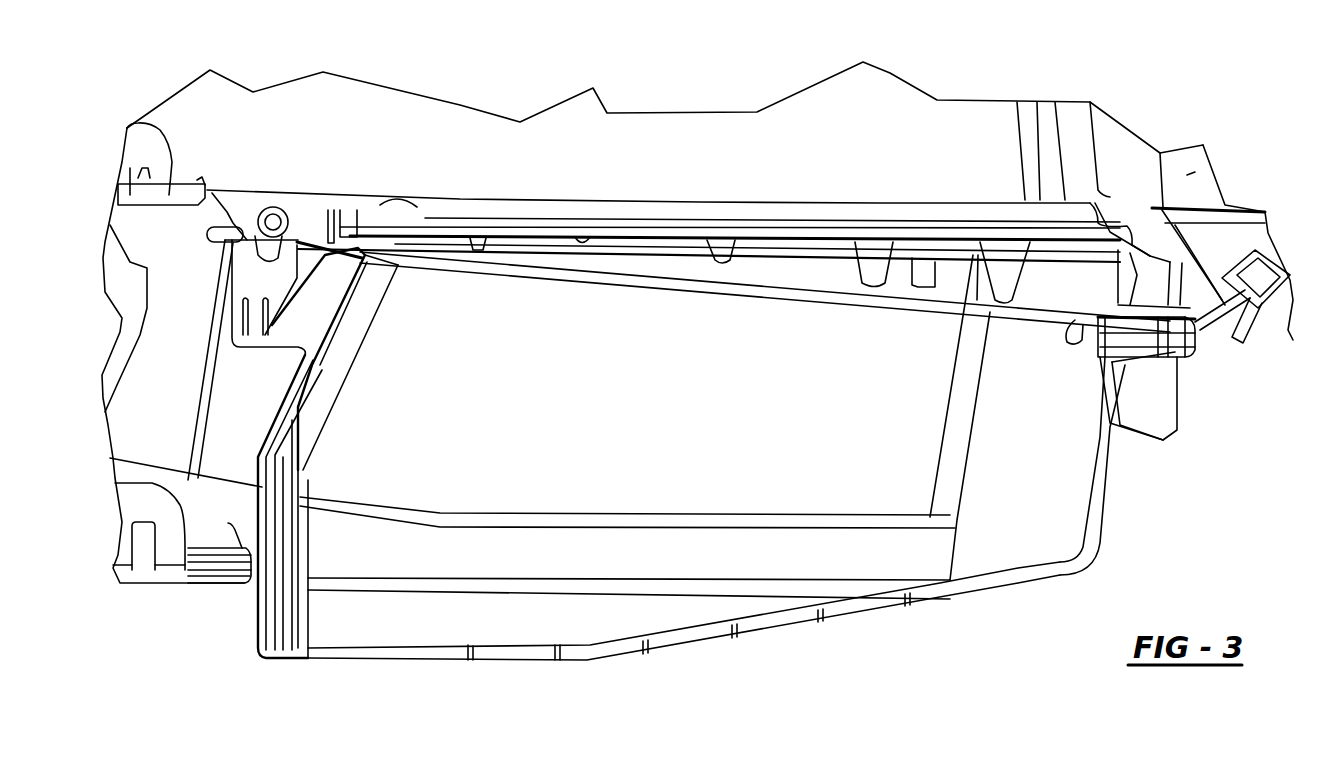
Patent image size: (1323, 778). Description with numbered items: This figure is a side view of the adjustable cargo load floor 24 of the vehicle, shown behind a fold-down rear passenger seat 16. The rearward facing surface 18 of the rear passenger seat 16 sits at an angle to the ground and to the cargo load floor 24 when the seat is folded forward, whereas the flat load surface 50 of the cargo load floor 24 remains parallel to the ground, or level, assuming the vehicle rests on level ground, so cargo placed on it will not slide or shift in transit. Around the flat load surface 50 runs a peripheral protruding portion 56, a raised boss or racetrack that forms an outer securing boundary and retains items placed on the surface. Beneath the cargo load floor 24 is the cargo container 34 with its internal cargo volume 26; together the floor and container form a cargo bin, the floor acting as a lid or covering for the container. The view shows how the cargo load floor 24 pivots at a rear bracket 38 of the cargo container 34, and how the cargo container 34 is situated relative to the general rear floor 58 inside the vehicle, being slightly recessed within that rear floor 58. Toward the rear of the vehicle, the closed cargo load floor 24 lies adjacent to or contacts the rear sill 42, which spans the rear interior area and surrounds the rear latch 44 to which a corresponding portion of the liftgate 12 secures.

The liftgate 12 is at (1187, 175).
The rear passenger seat 16 is at (172, 128).
The rearward facing surface 18 is at (128, 167).
The cargo load floor 24 is at (677, 237).
The internal cargo volume 26 is at (636, 449).
The cargo container 34 is at (1100, 527).
The rear bracket 38 is at (250, 273).
The rear sill 42 is at (1200, 337).
The rear latch 44 is at (1292, 300).
The flat load surface 50 is at (798, 227).
The peripheral protruding portion 56 is at (1173, 207).
The rear floor 58 is at (228, 523).